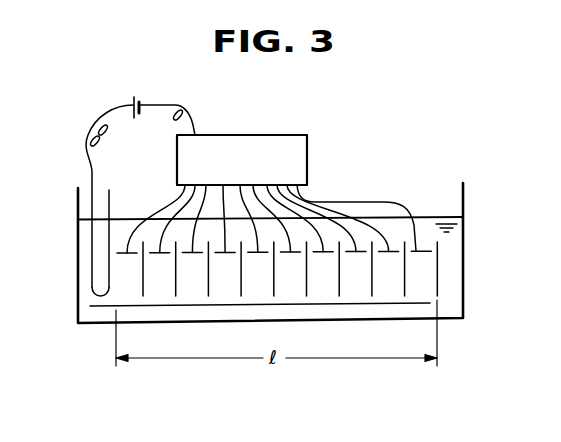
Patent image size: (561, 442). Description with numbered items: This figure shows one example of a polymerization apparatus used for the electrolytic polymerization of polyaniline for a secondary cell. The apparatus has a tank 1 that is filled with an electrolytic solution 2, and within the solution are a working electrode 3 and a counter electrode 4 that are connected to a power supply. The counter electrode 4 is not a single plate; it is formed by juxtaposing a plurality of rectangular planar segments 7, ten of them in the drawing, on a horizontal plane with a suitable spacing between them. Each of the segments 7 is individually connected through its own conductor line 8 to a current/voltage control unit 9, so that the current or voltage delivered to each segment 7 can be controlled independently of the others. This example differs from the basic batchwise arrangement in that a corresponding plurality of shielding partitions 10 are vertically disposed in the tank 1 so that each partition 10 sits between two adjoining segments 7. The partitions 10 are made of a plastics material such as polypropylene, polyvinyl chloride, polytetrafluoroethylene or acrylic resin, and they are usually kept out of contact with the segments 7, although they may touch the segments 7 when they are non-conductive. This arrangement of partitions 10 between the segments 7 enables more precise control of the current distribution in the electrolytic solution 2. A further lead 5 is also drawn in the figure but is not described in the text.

The tank 1 is at (463, 198).
The electrolytic solution 2 is at (455, 270).
The working electrode 3 is at (420, 303).
The counter electrode 4 is at (423, 248).
The reference electrode lead 5 is at (109, 195).
The rectangular planar segments 7 is at (229, 257).
The conductor lines 8 is at (383, 202).
The current/voltage control unit 9 is at (305, 150).
The shielding partitions 10 is at (143, 281).